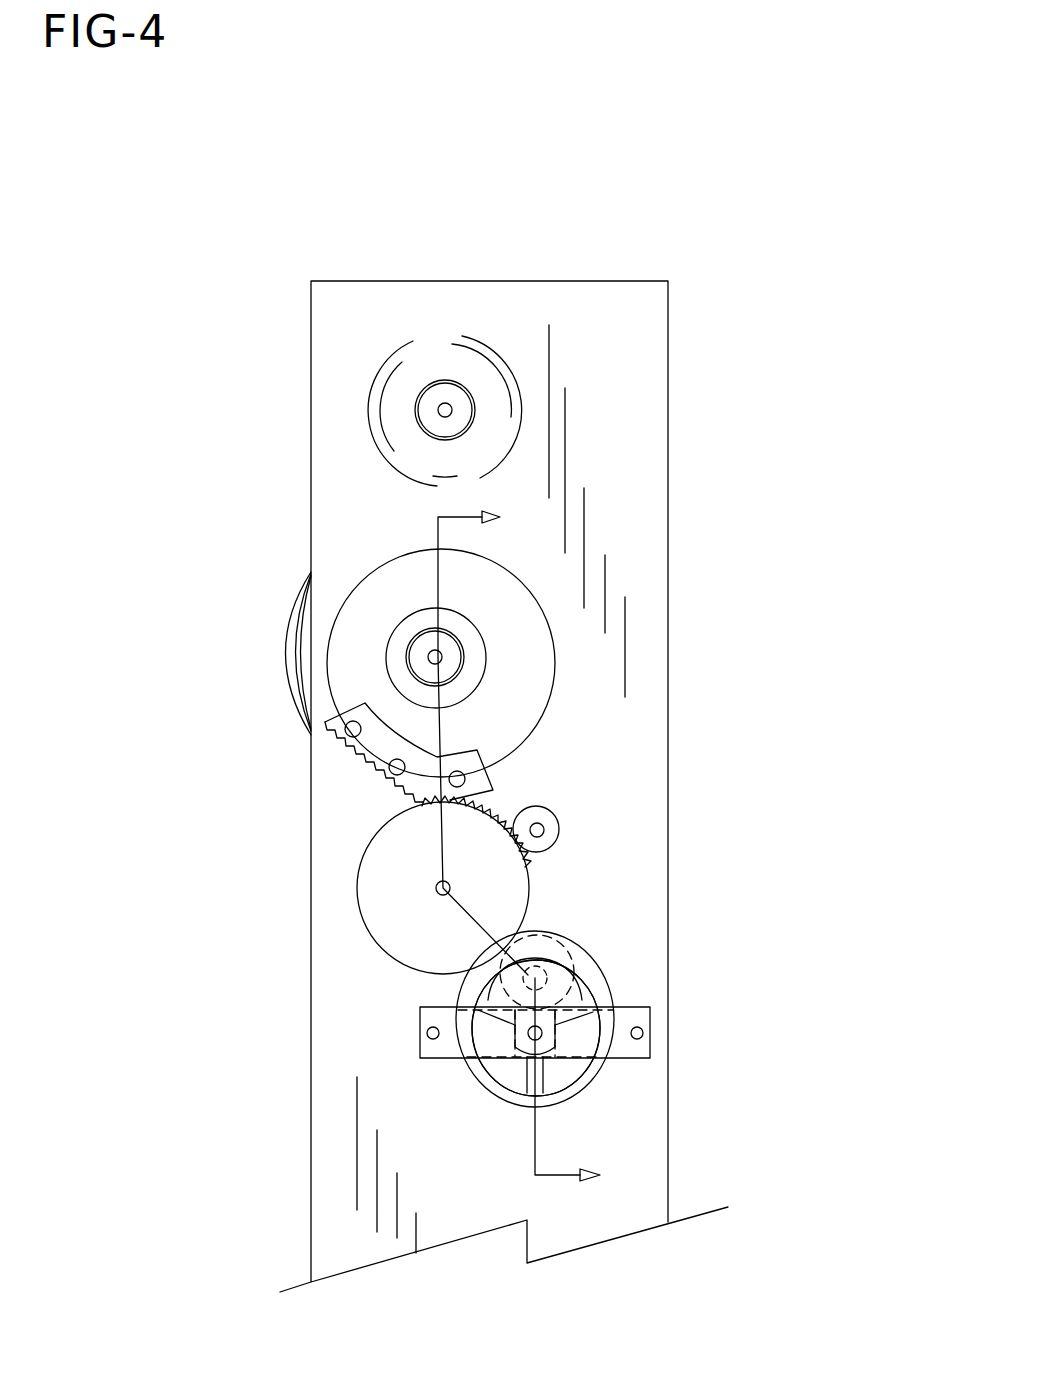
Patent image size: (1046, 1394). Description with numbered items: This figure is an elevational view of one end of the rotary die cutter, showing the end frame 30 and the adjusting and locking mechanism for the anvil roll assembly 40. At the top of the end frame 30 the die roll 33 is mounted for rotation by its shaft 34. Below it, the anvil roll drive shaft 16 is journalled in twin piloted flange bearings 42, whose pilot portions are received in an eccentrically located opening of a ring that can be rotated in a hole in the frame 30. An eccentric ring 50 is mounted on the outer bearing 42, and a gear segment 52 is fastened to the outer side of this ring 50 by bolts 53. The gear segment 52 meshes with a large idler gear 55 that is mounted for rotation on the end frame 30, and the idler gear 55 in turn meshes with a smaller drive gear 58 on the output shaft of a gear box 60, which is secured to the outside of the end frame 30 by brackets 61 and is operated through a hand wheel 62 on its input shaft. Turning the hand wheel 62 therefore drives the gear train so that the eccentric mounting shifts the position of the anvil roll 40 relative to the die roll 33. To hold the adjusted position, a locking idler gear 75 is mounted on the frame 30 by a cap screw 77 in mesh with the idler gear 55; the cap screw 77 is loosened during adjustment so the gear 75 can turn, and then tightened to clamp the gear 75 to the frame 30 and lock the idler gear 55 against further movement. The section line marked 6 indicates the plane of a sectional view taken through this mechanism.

The end frame 30 is at (637, 310).
The die roll 33 is at (387, 353).
The shaft 34 is at (447, 385).
The anvil roll drive shaft 16 is at (420, 648).
The piloted flange bearing 42 is at (468, 632).
The eccentric ring 50 is at (520, 695).
The anvil roll assembly 40 is at (242, 635).
The gear segment 52 is at (377, 750).
The bolt 53 is at (346, 726).
The idler gear 55 is at (380, 927).
The idler gear 75 is at (541, 807).
The cap screw 77 is at (537, 830).
The drive gear 58 is at (550, 937).
The gear box 60 is at (573, 940).
The bracket 61 is at (636, 1018).
The hand wheel 62 is at (590, 1082).
The section line 6- 6 is at (540, 850).